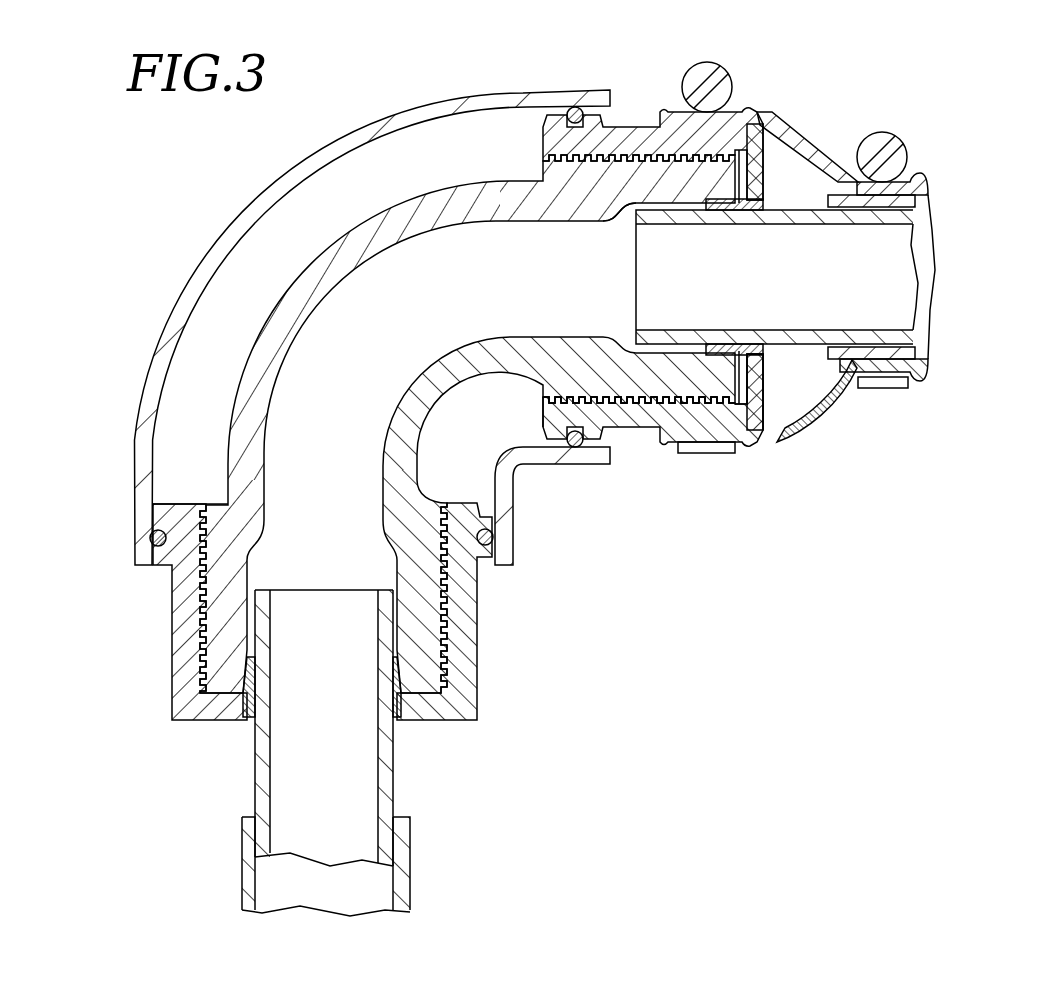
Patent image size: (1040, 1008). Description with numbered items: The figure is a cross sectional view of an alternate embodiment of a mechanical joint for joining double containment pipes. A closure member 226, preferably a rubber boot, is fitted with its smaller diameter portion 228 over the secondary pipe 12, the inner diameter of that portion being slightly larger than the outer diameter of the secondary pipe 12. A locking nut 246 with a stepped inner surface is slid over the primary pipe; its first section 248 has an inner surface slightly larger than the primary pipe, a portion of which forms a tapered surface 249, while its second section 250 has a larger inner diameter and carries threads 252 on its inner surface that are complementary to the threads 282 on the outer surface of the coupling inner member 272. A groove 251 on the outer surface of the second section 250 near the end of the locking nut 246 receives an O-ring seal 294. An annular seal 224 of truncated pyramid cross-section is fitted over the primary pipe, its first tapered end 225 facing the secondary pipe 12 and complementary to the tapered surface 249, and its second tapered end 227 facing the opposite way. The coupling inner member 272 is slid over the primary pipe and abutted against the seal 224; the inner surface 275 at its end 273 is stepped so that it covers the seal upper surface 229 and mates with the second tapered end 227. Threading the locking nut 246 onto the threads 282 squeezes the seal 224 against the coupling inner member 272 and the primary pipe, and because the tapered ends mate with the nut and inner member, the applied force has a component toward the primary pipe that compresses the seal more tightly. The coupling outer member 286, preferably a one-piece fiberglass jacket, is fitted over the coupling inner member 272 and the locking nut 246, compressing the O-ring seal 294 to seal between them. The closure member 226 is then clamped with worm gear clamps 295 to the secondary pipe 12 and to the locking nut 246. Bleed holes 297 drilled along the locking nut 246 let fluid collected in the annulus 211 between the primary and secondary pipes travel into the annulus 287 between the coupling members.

The secondary pipe 12 is at (929, 183).
The annulus 211 is at (877, 352).
The annular seal 224 is at (712, 212).
The first tapered end 225 is at (787, 208).
The closure member 226 is at (775, 115).
The second tapered end 227 is at (612, 220).
The smaller diameter portion 228 is at (929, 362).
The seal upper surface 229 is at (677, 157).
The locking nut 246 is at (535, 392).
The first section 248 is at (764, 378).
The tapered surface 249 is at (778, 347).
The second section 250 is at (546, 432).
The groove 251 is at (585, 449).
The threads 252 is at (656, 404).
The coupling inner member 272 is at (398, 184).
The end 273 is at (715, 175).
The inner surface 275 is at (733, 198).
The threads 282 is at (599, 380).
The coupling outer member 286 is at (270, 165).
The annulus 287 is at (240, 367).
The O-ring seal 294 is at (578, 448).
The worm gear clamps 295 is at (728, 78).
The bleed holes 297 is at (768, 415).